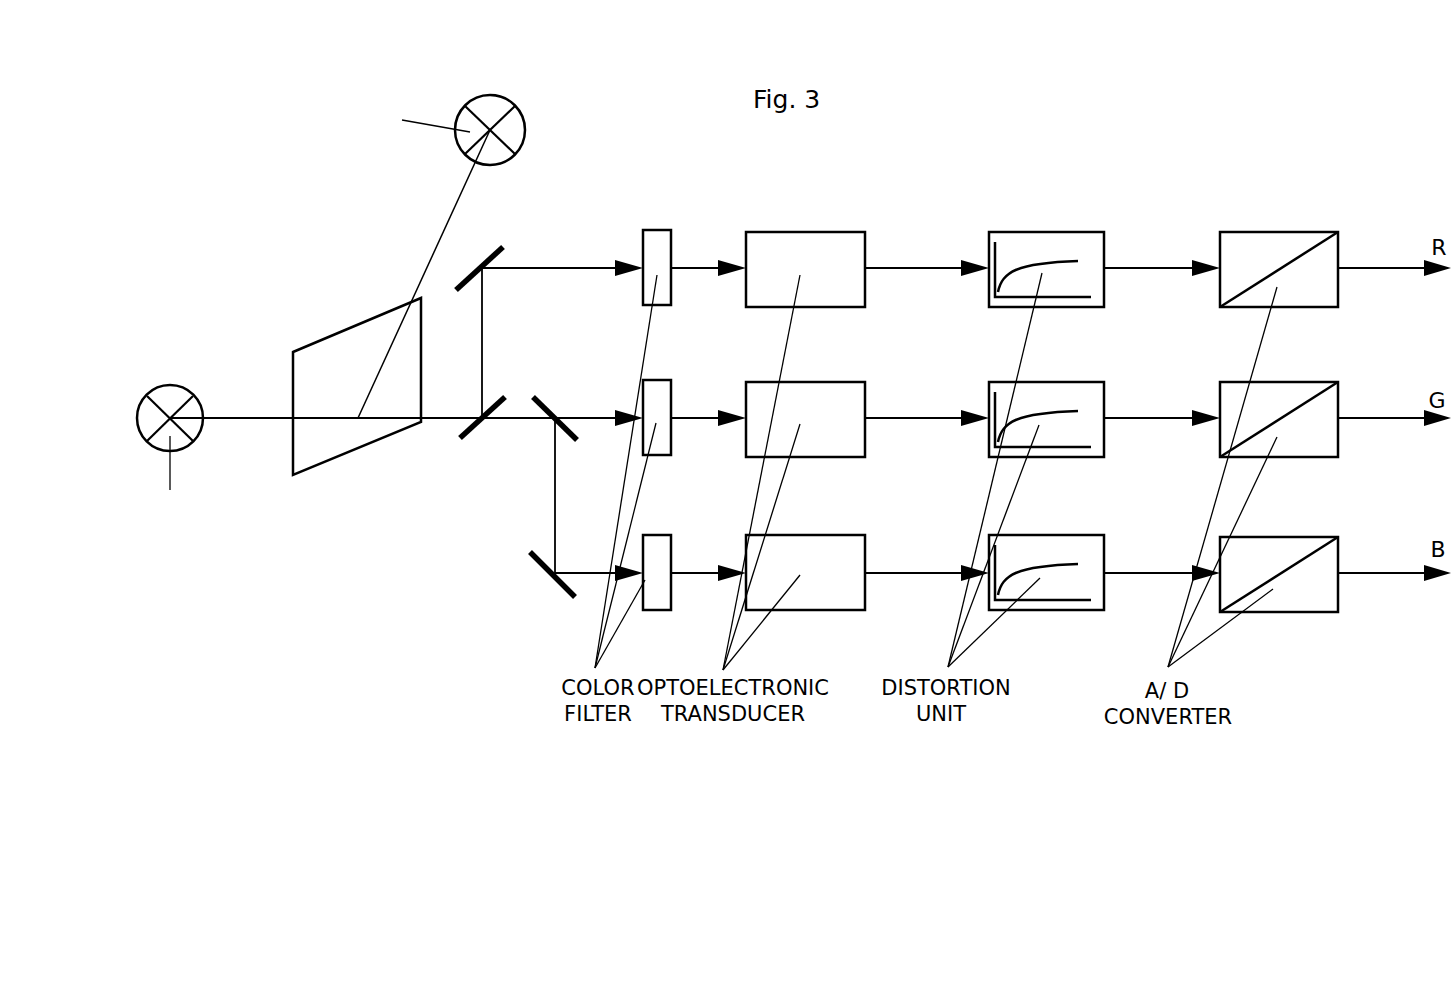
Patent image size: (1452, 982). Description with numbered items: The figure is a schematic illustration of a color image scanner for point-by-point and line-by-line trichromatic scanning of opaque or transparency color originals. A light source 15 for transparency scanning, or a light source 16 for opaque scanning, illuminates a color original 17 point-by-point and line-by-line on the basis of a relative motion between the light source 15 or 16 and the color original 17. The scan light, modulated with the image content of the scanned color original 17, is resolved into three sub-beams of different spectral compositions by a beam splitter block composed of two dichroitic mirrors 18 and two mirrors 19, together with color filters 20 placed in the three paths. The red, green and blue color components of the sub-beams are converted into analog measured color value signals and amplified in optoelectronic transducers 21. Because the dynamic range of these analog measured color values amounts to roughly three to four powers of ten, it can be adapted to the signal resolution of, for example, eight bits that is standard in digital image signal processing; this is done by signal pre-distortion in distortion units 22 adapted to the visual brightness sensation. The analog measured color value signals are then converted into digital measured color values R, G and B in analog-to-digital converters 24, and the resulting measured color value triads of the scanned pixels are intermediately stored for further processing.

The light source 15 is at (185, 385).
The light source 16 is at (527, 132).
The color original 17 is at (347, 365).
The dichroitic mirrors 18 is at (476, 433).
The mirrors 19 is at (492, 252).
The color filters 20 is at (657, 252).
The optoelectronic transducers 21 is at (847, 255).
The distortion units 22 is at (1080, 265).
The analog-to-digital converters 24 is at (1313, 265).